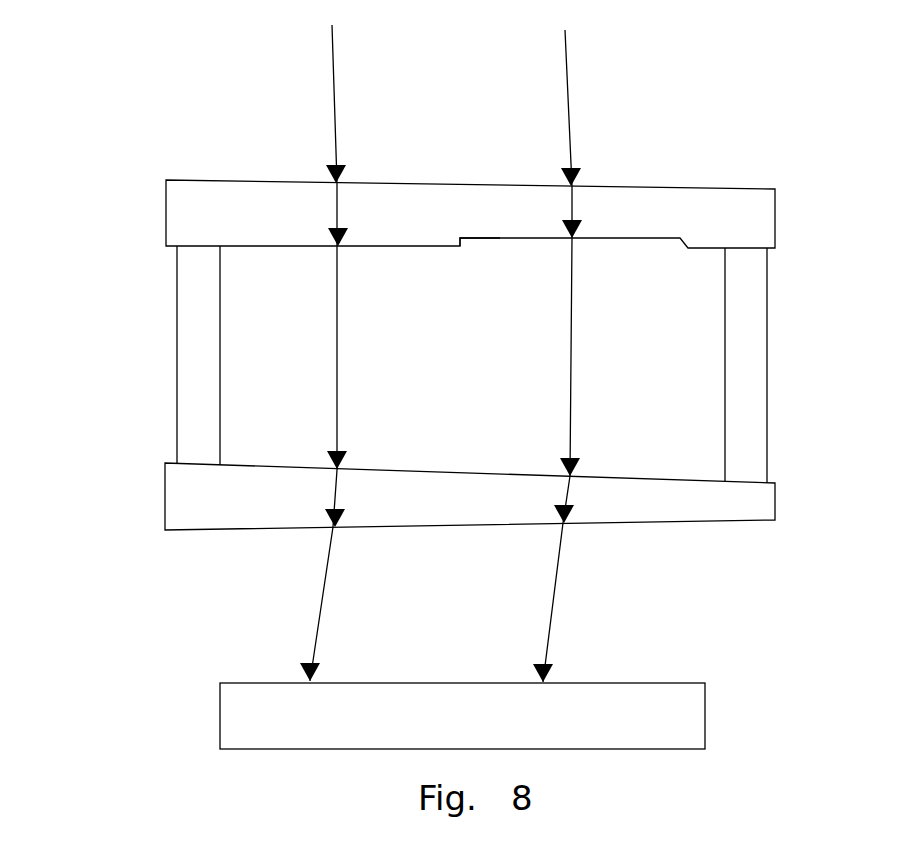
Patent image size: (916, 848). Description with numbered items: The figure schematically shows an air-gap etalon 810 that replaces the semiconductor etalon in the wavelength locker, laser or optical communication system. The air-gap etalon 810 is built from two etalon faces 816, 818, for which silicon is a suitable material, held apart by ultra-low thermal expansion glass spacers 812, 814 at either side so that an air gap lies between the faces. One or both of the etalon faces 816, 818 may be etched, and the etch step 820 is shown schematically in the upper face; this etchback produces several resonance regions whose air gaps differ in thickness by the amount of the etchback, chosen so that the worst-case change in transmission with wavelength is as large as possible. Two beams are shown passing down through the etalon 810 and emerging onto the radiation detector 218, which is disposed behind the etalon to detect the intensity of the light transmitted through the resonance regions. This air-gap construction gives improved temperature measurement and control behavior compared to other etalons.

The air-gap etalon 810 is at (650, 125).
The etalon face 816 is at (647, 238).
The etch step 820 is at (460, 238).
The ultra-low thermal expansion glass spacer 814 is at (177, 397).
The ultra-low thermal expansion glass spacer 812 is at (767, 373).
The etalon face 818 is at (663, 482).
The radiation detector 218 is at (220, 720).